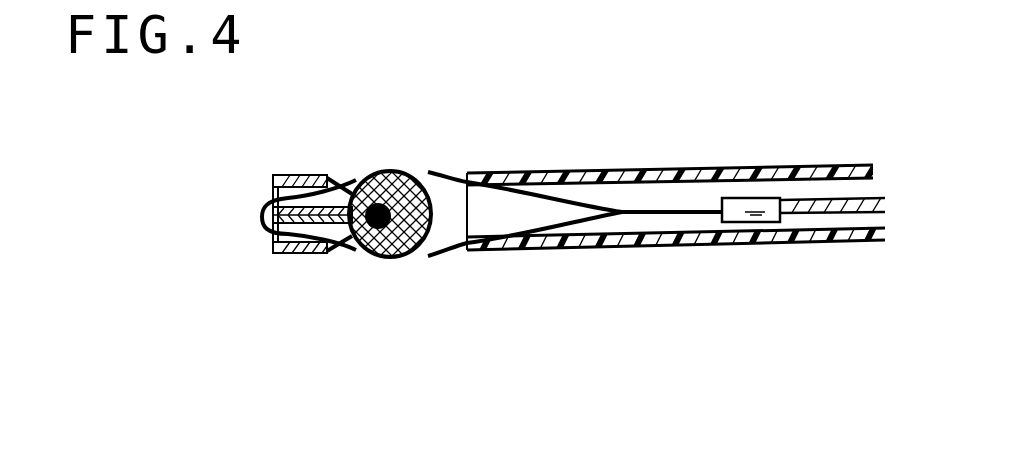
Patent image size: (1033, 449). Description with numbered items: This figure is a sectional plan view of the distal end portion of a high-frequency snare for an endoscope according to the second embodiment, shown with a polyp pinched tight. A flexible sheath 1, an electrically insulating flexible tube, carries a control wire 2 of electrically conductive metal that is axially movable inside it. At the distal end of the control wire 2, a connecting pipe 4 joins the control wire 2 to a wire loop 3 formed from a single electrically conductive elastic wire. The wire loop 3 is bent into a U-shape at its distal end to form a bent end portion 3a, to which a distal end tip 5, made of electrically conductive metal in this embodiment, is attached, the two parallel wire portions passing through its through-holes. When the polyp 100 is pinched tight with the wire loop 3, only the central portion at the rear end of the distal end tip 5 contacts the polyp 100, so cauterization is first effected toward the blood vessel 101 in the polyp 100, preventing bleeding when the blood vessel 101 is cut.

The flexible sheath 1 is at (664, 178).
The control wire 2 is at (836, 203).
The wire loop 3 is at (411, 219).
The U-shaped bent end portion 3a is at (259, 227).
The connecting pipe 4 is at (756, 215).
The distal end tip 5 is at (297, 171).
The polyp 100 is at (407, 256).
The blood vessel 101 is at (367, 252).